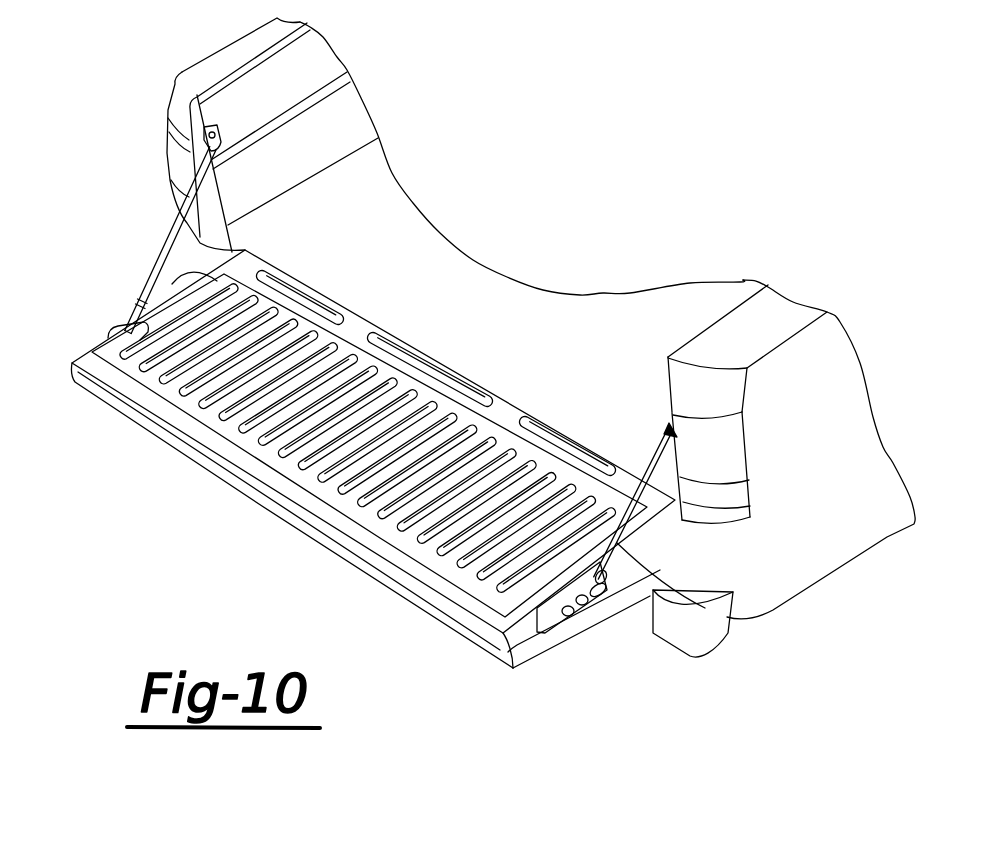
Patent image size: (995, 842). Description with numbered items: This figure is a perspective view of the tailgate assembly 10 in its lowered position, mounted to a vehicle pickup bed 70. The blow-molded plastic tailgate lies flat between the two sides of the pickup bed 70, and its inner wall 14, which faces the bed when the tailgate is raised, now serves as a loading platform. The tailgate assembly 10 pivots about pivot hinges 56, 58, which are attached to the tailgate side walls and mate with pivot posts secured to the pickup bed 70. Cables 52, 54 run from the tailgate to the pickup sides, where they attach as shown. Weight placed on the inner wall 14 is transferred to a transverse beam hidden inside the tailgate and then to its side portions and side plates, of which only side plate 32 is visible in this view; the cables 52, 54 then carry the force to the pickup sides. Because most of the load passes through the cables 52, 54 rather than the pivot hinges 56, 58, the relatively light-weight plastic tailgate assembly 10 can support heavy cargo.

The tailgate assembly 10 is at (201, 511).
The inner wall 14 is at (458, 556).
The side plate 32 is at (546, 626).
The cable 52 is at (648, 505).
The cable 54 is at (168, 254).
The pivot hinge 56 is at (642, 575).
The pivot hinge 58 is at (154, 259).
The vehicle pickup bed 70 is at (590, 316).